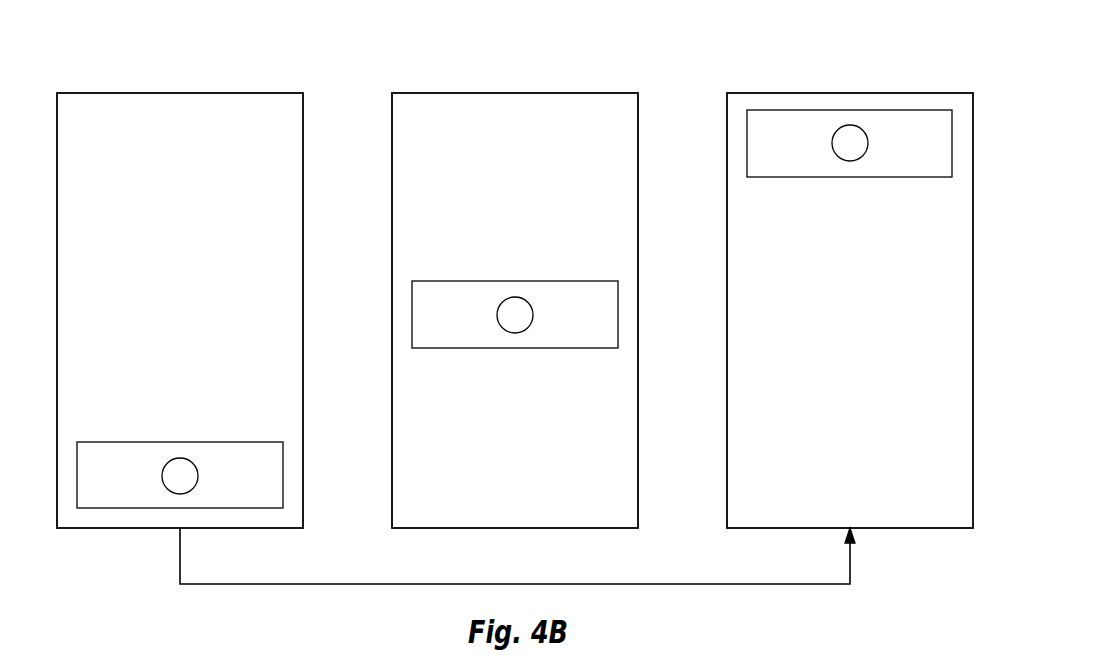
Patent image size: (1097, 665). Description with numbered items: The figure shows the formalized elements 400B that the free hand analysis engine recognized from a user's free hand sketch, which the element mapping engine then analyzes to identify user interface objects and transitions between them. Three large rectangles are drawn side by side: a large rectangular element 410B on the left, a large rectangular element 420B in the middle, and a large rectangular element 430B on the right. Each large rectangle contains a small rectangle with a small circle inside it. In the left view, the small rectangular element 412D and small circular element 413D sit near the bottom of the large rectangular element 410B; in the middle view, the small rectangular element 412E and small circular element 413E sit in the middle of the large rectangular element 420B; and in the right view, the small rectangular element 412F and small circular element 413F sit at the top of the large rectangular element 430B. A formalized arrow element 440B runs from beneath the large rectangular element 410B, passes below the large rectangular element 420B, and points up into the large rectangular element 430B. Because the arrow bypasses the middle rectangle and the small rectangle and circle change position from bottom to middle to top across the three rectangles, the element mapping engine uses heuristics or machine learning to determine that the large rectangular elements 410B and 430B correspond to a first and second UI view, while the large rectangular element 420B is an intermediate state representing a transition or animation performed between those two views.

The formalized elements 400B is at (539, 42).
The large rectangular element 410B is at (186, 92).
The large rectangular element 420B is at (580, 92).
The large rectangular element 430B is at (892, 92).
The small rectangular element 412D is at (205, 442).
The small circular element 413D is at (198, 470).
The small rectangular element 412E is at (526, 281).
The small circular element 413E is at (533, 313).
The small rectangular element 412F is at (860, 177).
The small circular element 413F is at (868, 145).
The formalized arrow element 440B is at (657, 583).